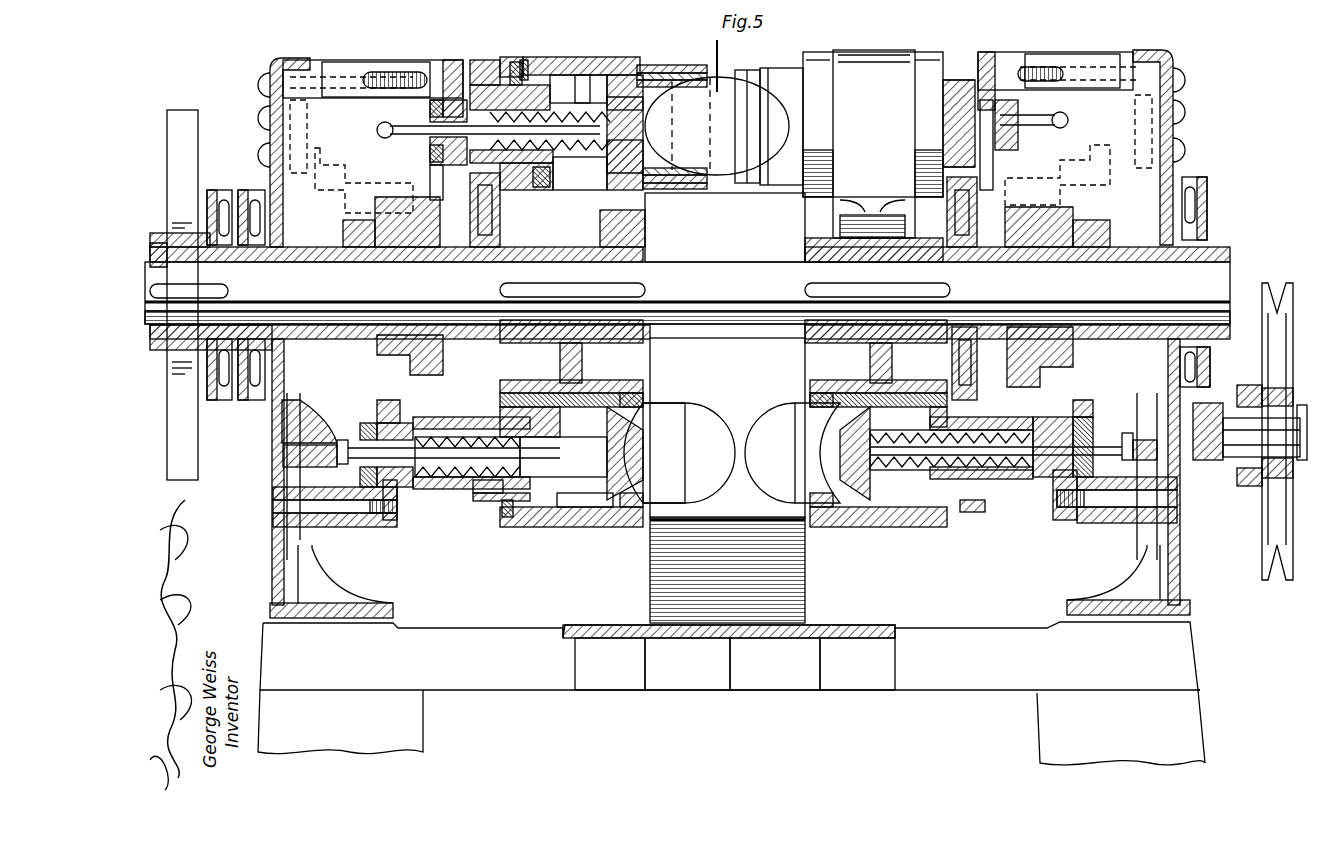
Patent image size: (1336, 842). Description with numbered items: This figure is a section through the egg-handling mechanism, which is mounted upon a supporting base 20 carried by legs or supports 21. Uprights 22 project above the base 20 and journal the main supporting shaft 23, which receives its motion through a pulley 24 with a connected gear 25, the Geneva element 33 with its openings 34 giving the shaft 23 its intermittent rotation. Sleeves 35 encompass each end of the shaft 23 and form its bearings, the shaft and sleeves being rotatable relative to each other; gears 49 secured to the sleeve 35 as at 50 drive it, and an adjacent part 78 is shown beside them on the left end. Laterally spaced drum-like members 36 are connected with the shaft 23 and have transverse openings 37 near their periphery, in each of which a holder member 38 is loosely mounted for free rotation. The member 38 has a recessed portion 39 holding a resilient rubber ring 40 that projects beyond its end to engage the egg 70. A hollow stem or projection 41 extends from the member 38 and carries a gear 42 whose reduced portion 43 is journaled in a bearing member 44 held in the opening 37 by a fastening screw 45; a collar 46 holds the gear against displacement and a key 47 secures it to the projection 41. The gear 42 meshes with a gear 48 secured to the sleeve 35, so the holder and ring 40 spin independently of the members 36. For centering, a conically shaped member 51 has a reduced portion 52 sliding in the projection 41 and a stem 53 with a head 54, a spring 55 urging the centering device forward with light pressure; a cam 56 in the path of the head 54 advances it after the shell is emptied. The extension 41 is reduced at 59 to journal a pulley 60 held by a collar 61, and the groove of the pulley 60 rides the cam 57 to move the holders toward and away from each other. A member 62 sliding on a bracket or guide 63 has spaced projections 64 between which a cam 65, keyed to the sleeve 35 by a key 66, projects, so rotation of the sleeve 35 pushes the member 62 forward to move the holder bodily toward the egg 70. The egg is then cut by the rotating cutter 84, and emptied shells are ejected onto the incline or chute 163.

The supporting base 20 is at (975, 626).
The legs or supports 21 is at (415, 730).
The uprights 22 is at (268, 132).
The shaft 23 is at (742, 266).
The pulley 24 is at (1289, 431).
The gear 25 is at (1250, 462).
The Geneva element 33 is at (163, 250).
The openings 34 is at (170, 142).
The sleeves 35 is at (375, 258).
The laterally spaced members 36 is at (632, 240).
The openings 37 is at (597, 52).
The member 38 is at (640, 63).
The recessed portion 39 is at (660, 72).
The ring 40 is at (685, 78).
The stem or projection 41 is at (1060, 410).
The gear 42 is at (480, 84).
The reduced portion 43 is at (520, 62).
The bearing member 44 is at (490, 62).
The fastening screw 45 is at (524, 60).
The collar 46 is at (552, 60).
The key 47 is at (575, 170).
The gear 48 is at (490, 222).
The gears 49 is at (250, 195).
The securing point 50 is at (690, 301).
The conically shaped member 51 is at (655, 122).
The reduced portion 52 is at (786, 299).
The stem 53 is at (412, 135).
The head 54 is at (380, 125).
The spring 55 is at (1040, 408).
The cam 56 is at (320, 425).
The cam 57 is at (450, 62).
The reduced portion 59 is at (428, 118).
The pulley 60 is at (398, 420).
The collar 61 is at (435, 98).
The member 62 is at (714, 169).
The bracket or guide 63 is at (308, 128).
The spaced projections 64 is at (1040, 207).
The cam 65 is at (432, 226).
The key 66 is at (445, 282).
The egg 70 is at (715, 180).
The collar 78 is at (220, 402).
The rotating cutter 84 is at (732, 64).
The incline or chute 163 is at (806, 574).